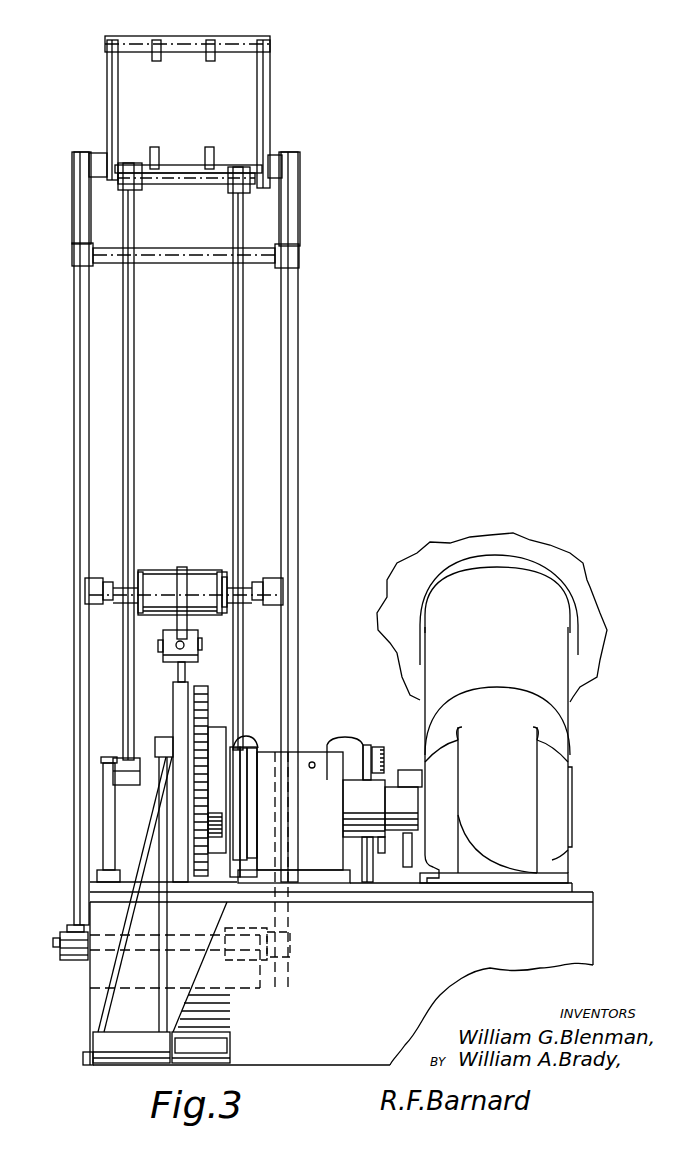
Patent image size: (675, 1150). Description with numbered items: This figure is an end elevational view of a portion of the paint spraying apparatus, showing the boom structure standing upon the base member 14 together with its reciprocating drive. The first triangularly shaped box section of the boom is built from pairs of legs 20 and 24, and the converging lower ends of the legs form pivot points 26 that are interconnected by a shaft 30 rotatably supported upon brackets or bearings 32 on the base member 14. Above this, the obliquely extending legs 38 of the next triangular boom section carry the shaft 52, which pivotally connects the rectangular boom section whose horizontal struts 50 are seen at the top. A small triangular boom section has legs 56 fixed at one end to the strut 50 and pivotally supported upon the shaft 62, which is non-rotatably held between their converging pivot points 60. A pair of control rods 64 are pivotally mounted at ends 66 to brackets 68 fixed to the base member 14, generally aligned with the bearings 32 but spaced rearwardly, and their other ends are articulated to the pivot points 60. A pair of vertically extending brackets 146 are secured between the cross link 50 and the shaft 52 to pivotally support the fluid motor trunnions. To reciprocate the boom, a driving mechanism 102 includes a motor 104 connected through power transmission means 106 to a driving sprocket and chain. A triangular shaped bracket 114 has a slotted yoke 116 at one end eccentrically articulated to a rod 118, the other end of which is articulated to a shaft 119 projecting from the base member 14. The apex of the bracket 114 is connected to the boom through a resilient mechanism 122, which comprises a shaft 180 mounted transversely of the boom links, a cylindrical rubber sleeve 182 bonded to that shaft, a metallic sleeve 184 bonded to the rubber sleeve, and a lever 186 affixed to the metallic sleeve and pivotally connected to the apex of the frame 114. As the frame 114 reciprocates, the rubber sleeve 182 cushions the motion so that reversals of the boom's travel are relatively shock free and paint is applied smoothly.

The base member 14 is at (598, 918).
The legs 20 is at (78, 440).
The legs 24 is at (150, 258).
The pivot points 26 is at (62, 938).
The shaft 30 is at (196, 935).
The brackets or bearings 32 is at (87, 960).
The legs 38 is at (82, 196).
The horizontal struts 50 is at (172, 42).
The shaft 52 is at (203, 165).
The legs 56 is at (110, 125).
The pivot points 60 is at (126, 180).
The shaft 62 is at (180, 184).
The control rods 64 is at (238, 455).
The ends 66 is at (124, 764).
The brackets 68 is at (104, 850).
The driving mechanism 102 is at (592, 588).
The motor 104 is at (508, 548).
The power transmission means 106 is at (570, 806).
The triangular shaped bracket 114 is at (178, 672).
The slotted yoke 116 is at (176, 716).
The rod 118 is at (150, 830).
The shaft 119 is at (100, 1048).
The resilient connection mechanism 122 is at (221, 580).
The vertically extending brackets 146 is at (161, 62).
The shaft 180 is at (112, 588).
The cylindrical rubber sleeve 182 is at (166, 590).
The metallic sleeve 184 is at (180, 576).
The lever 186 is at (176, 636).